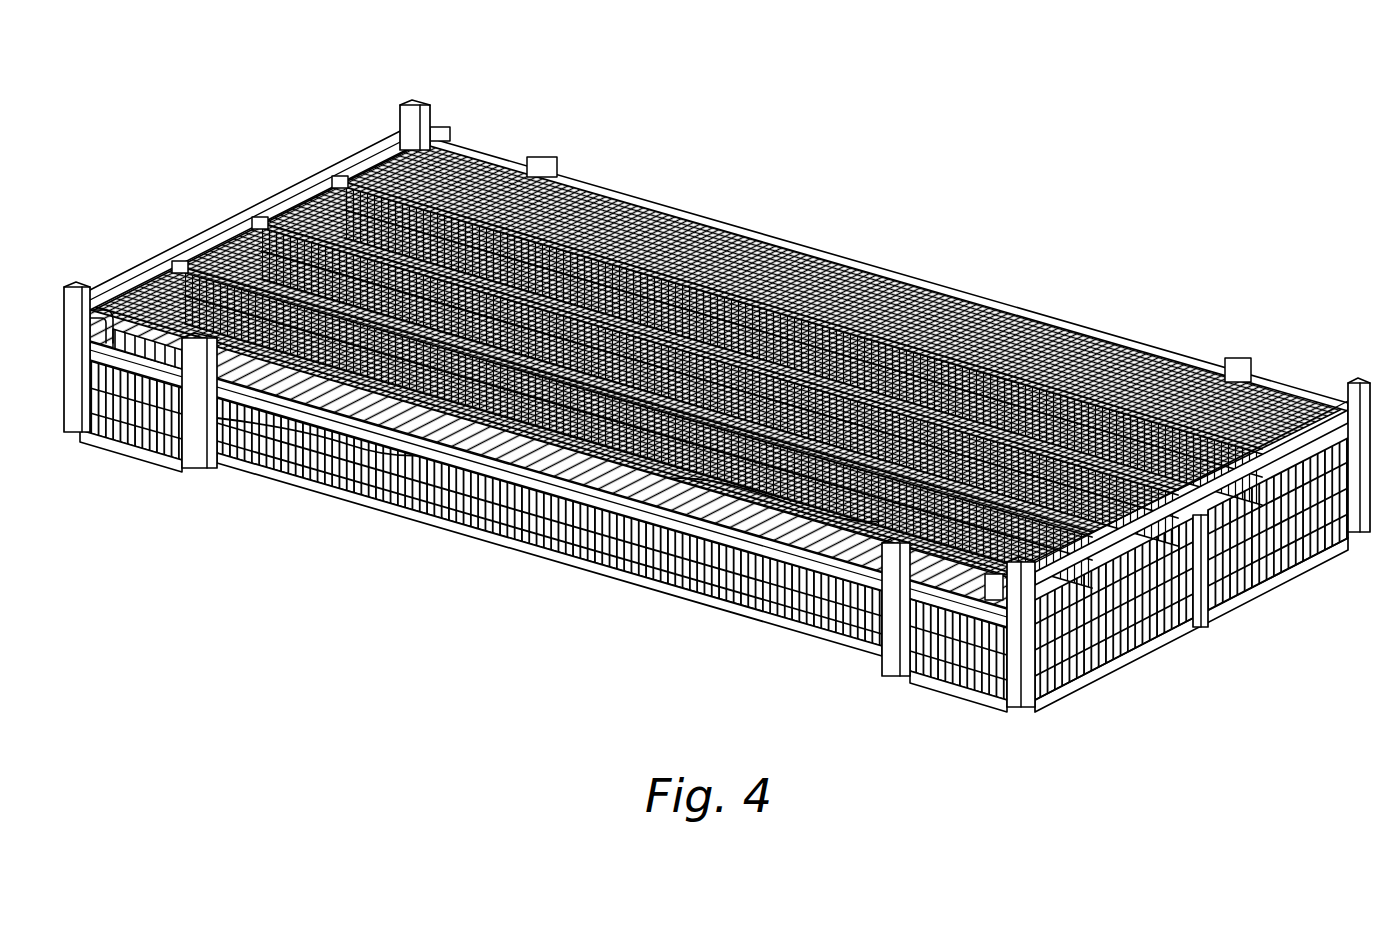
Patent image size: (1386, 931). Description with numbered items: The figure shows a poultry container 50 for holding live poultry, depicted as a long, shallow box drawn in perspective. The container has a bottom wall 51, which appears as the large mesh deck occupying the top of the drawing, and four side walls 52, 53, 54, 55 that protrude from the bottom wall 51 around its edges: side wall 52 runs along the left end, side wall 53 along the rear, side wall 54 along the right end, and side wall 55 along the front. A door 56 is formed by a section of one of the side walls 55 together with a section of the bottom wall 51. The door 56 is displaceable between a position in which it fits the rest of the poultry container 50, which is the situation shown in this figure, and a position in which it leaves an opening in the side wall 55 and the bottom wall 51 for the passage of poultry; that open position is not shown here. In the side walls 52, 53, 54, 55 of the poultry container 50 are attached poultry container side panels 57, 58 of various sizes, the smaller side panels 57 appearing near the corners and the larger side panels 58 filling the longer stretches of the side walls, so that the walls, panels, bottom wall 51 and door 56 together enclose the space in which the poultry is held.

The poultry container 50 is at (702, 405).
The bottom wall 51 is at (973, 460).
The side wall 52 is at (236, 201).
The side wall 53 is at (874, 262).
The side wall 54 is at (1219, 632).
The side wall 55 is at (590, 597).
The door 56 is at (752, 229).
The poultry container side panel 57 is at (500, 155).
The poultry container side panel 58 is at (313, 173).